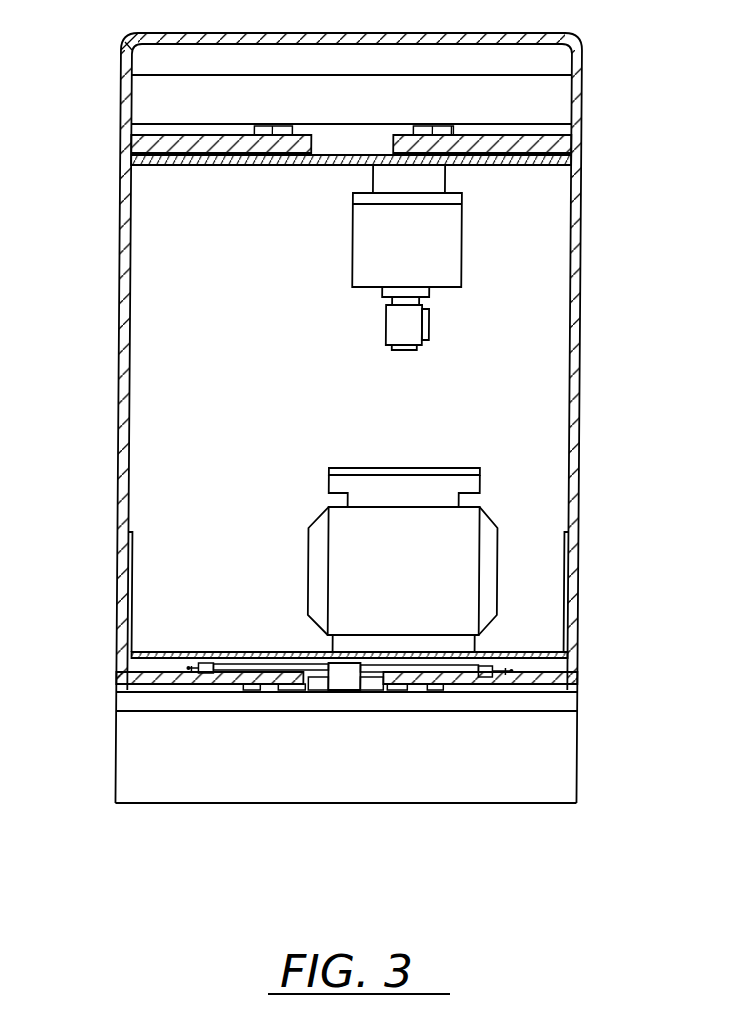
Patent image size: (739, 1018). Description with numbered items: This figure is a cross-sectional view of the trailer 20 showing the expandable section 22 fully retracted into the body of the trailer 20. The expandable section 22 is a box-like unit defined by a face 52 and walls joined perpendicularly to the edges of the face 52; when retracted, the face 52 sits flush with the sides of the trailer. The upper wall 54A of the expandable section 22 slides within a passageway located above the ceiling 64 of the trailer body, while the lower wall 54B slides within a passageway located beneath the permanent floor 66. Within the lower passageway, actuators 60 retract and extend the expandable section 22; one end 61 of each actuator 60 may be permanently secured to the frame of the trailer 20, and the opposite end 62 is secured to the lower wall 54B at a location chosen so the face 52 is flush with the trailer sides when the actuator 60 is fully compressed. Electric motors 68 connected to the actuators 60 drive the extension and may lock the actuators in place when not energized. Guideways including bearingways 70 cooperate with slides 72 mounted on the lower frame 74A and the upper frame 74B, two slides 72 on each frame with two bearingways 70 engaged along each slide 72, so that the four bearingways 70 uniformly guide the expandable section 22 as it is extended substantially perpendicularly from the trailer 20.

The trailer 20 is at (310, 33).
The expandable section 22 is at (121, 383).
The face 52 is at (121, 438).
The upper wall 54A is at (221, 147).
The lower wall 54B is at (172, 675).
The actuator 60 is at (262, 628).
The end of actuator 61 is at (330, 660).
The opposite end of actuator 62 is at (191, 667).
The ceiling 64 is at (313, 163).
The permanent floor 66 is at (198, 666).
The electric motor 68 is at (353, 682).
The bearingway 70 is at (257, 688).
The slide 72 is at (187, 127).
The lower frame 74A is at (460, 711).
The upper frame 74B is at (378, 111).